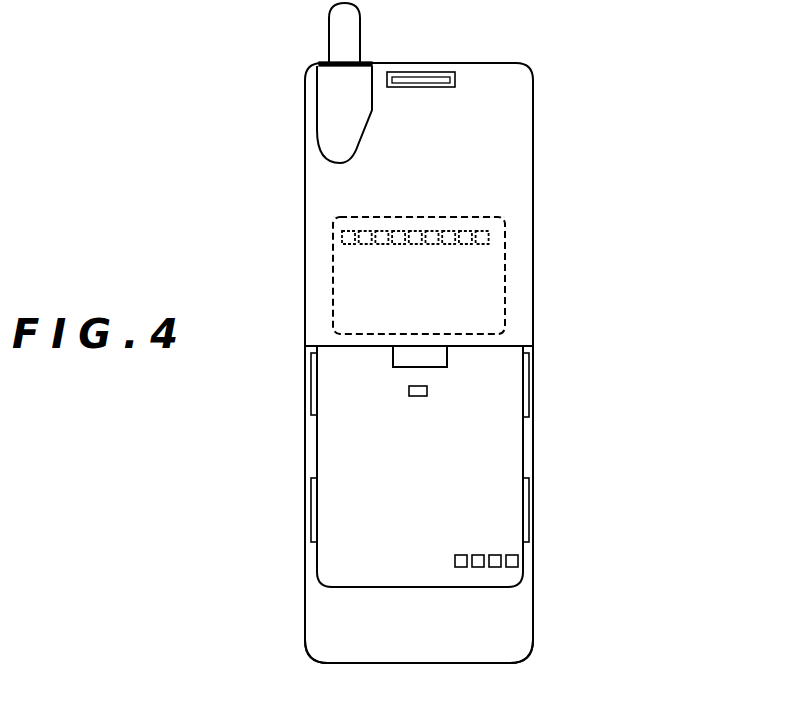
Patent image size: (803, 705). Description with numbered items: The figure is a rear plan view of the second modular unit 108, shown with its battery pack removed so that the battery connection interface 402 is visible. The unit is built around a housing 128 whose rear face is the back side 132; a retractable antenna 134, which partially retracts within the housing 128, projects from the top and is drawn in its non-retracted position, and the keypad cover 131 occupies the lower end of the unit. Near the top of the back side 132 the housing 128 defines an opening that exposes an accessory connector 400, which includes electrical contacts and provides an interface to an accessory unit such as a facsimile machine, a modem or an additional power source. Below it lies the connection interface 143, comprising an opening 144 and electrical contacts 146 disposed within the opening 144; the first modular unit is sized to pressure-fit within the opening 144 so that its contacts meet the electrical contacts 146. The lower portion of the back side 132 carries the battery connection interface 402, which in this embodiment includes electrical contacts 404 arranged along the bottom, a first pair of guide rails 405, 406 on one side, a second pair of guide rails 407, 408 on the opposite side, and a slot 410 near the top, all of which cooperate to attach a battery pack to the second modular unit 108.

The second modular unit 108 is at (652, 87).
The housing 128 is at (392, 62).
The keypad cover 131 is at (533, 613).
The back side 132 is at (313, 175).
The retractable antenna 134 is at (328, 27).
The connection interface 143 is at (417, 210).
The opening 144 is at (340, 297).
The electrical contacts 146 is at (386, 252).
The accessory connector 400 is at (422, 80).
The battery connection interface 402 is at (332, 462).
The electrical contacts 404 is at (487, 545).
The guide rail 405 is at (312, 515).
The guide rail 406 is at (312, 393).
The guide rail 407 is at (527, 517).
The guide rail 408 is at (527, 385).
The slot 410 is at (414, 397).